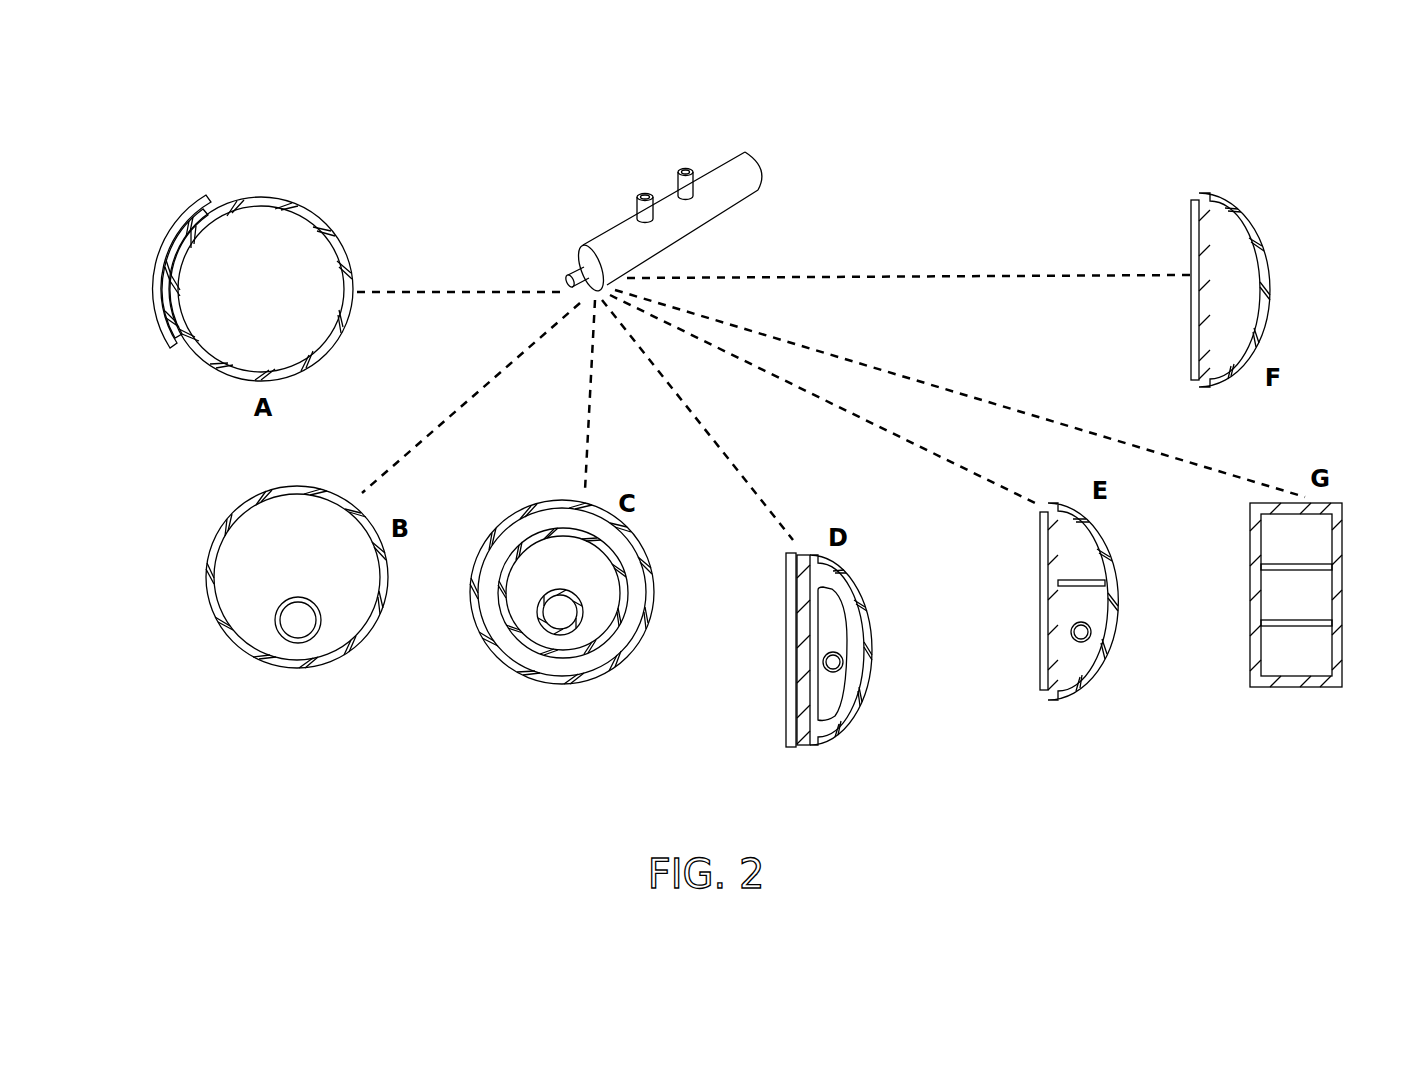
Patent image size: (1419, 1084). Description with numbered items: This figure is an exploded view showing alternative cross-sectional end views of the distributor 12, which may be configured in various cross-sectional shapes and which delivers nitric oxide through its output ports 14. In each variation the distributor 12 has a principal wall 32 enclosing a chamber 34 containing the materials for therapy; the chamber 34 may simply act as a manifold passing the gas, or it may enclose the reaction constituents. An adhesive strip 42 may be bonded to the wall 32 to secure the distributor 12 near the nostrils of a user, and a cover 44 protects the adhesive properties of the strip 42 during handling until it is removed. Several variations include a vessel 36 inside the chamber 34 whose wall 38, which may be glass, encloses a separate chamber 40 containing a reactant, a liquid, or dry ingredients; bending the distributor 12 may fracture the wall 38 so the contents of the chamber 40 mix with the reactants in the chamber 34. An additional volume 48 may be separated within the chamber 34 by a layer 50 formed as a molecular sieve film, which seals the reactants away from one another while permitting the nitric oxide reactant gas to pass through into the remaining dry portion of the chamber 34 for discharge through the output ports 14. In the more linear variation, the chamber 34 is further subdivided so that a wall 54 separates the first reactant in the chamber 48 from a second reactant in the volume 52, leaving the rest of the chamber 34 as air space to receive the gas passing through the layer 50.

The distributor 12 is at (640, 257).
The output ports 14 is at (647, 195).
The principal wall 32 is at (233, 372).
The chamber 34 is at (222, 333).
The vessel 36 is at (302, 588).
The wall 38 is at (296, 628).
The chamber 40 is at (302, 642).
The adhesive strip 42 is at (163, 292).
The cover 44 is at (170, 232).
The additional volume 48 is at (540, 643).
The molecular sieve layer 50 is at (577, 668).
The additional volume 52 is at (1277, 643).
The wall 54 is at (1320, 622).